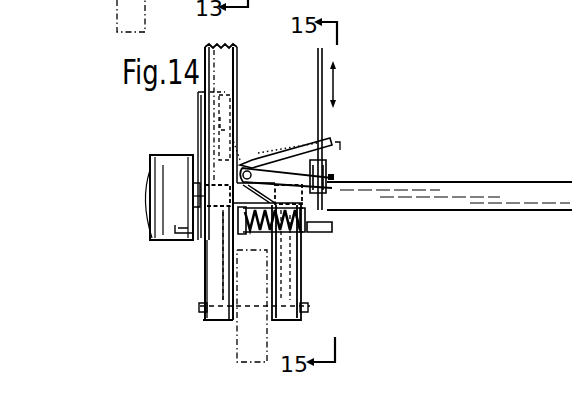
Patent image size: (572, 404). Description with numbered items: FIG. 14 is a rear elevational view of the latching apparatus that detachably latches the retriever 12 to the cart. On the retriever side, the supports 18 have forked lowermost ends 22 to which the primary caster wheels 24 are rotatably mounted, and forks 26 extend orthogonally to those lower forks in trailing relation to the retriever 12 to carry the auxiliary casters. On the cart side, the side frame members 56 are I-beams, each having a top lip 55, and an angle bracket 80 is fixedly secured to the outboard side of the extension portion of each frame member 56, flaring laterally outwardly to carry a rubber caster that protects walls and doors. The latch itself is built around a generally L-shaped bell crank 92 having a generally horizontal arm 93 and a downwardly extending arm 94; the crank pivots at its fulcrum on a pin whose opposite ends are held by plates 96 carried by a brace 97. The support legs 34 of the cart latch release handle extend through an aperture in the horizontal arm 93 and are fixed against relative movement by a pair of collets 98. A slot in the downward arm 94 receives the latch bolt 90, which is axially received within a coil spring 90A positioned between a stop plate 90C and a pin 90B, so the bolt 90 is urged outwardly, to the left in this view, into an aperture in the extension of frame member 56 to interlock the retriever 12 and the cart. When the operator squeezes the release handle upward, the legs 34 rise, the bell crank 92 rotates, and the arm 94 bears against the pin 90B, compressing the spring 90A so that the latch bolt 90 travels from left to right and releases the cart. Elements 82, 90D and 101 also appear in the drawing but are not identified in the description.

The retriever 12 is at (379, 83).
The support 18 is at (220, 50).
The forked lowermost end 22 is at (218, 262).
The primary caster wheel 24 is at (120, 0).
The fork 26 is at (205, 197).
The support leg 34 is at (324, 58).
The top lip 55 is at (200, 90).
The side frame member 56 is at (200, 127).
The angle bracket 80 is at (158, 240).
The housing 82 is at (150, 158).
The latch bolt 90 is at (320, 228).
The coil spring 90A is at (283, 228).
The pin 90B is at (243, 225).
The stop plate 90C is at (300, 205).
The bracket block 90D is at (198, 186).
The bell crank 92 is at (315, 157).
The horizontal arm 93 is at (333, 177).
The downwardly extending arm 94 is at (247, 230).
The plate 96 is at (240, 165).
The brace 97 is at (238, 78).
The collet 98 is at (338, 143).
The pusher arm 101 is at (449, 173).